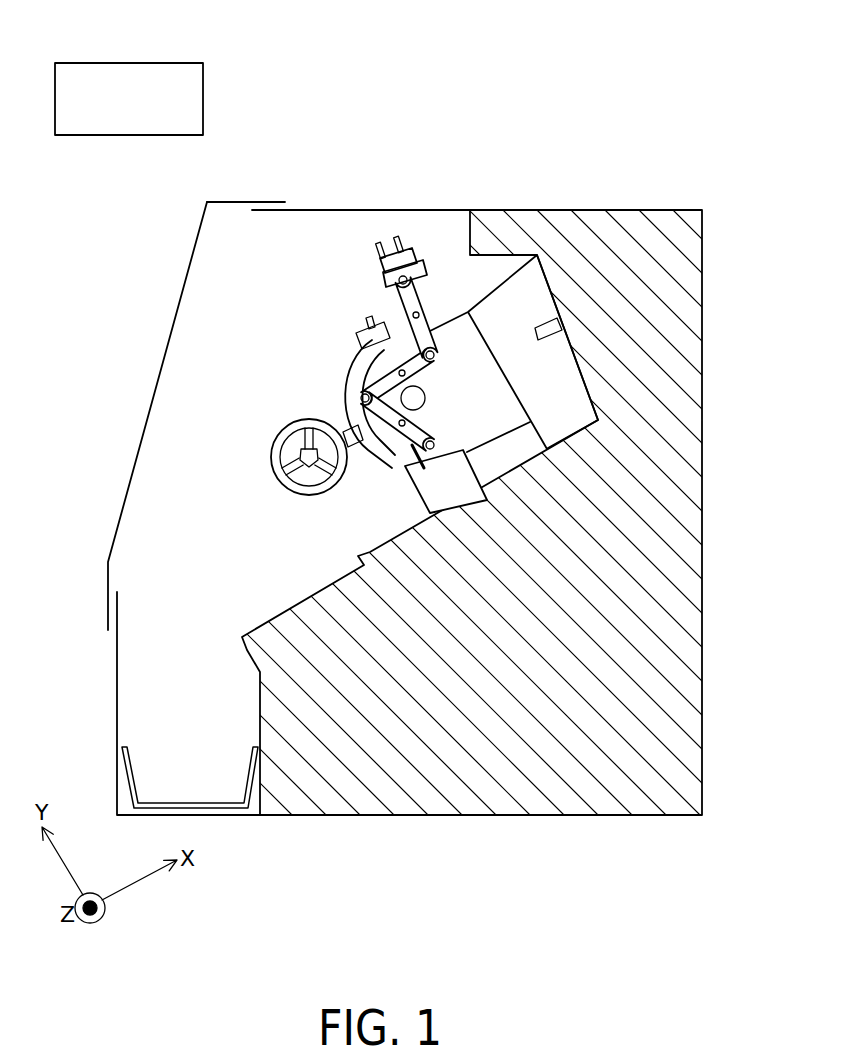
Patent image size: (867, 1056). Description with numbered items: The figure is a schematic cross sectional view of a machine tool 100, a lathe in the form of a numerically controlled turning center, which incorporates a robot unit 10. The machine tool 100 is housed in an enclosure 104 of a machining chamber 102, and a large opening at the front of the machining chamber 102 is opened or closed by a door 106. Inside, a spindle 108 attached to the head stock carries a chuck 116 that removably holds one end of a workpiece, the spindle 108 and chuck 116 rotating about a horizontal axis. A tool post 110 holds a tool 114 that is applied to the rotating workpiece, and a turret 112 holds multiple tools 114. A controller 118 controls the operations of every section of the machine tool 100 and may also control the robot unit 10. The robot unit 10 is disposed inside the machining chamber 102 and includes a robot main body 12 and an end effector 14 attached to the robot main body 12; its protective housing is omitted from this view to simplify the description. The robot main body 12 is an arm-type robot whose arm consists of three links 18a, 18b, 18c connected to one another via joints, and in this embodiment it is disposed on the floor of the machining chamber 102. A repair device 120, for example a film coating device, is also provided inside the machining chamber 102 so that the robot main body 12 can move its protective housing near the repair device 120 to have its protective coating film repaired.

The machine tool 100 is at (642, 159).
The machining chamber 102 is at (291, 280).
The enclosure 104 is at (355, 210).
The door 106 is at (181, 296).
The spindle 108 is at (289, 418).
The tool post 110 is at (536, 254).
The turret 112 is at (383, 453).
The tool 114 is at (360, 333).
The chuck 116 is at (292, 492).
The controller 118 is at (203, 98).
The repair device 120 is at (551, 341).
The robot unit 10 is at (438, 278).
The robot main body 12 is at (377, 306).
The end effector 14 is at (410, 256).
The link 18a is at (431, 316).
The link 18b is at (421, 366).
The link 18c is at (412, 447).